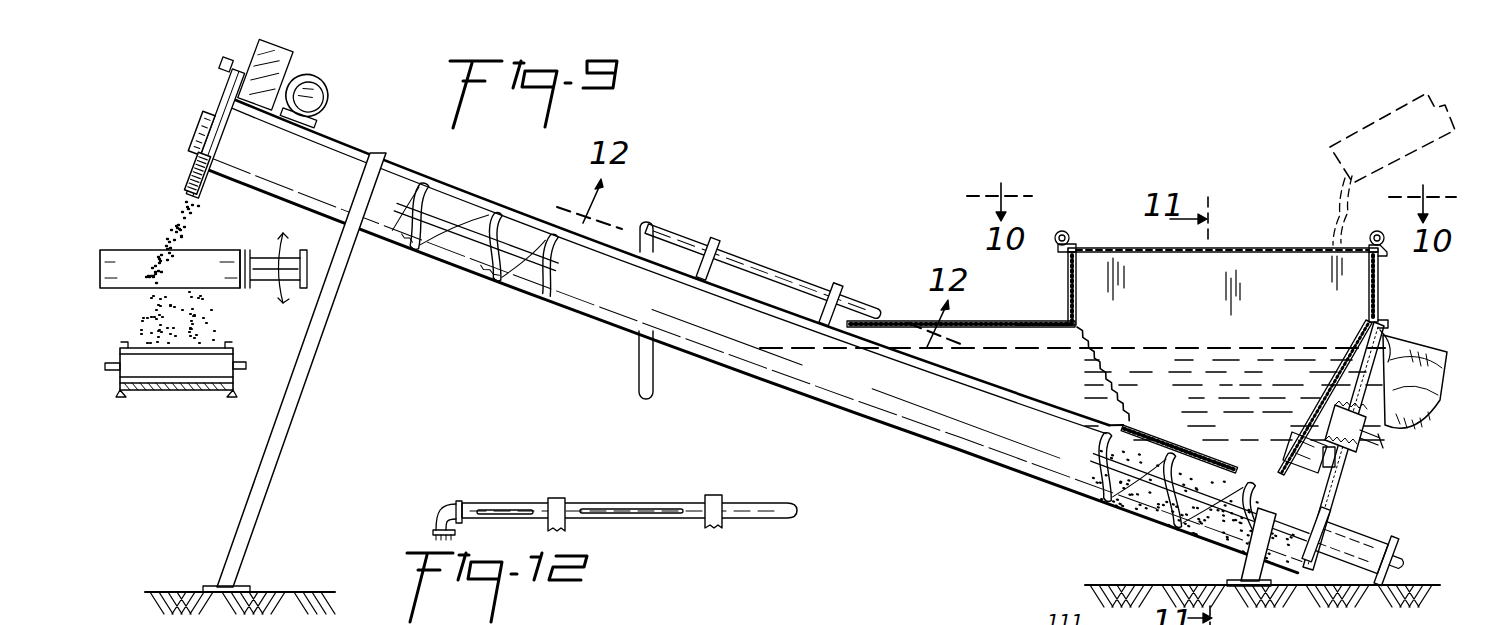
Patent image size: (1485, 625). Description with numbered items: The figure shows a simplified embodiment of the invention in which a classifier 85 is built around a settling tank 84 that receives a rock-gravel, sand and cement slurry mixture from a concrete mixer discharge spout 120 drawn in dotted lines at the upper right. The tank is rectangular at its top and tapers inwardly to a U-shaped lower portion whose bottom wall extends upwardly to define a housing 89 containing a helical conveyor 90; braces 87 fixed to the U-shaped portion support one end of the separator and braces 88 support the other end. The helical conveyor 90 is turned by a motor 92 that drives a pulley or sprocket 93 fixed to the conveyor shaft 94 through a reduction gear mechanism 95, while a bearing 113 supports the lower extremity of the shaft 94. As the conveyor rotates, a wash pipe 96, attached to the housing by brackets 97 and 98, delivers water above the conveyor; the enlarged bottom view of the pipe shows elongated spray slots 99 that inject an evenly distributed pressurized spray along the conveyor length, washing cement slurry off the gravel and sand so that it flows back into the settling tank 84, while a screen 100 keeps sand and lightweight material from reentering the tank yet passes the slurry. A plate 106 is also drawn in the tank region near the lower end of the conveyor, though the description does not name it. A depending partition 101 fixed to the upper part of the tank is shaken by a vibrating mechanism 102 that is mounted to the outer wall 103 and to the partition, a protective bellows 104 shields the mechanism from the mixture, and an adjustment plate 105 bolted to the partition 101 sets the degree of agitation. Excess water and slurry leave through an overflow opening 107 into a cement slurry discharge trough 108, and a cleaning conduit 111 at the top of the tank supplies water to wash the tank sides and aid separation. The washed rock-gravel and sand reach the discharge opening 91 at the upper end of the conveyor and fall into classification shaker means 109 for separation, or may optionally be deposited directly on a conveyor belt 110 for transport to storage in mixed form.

In FIG. 9, the settling tank 84 is at (1068, 280).
In FIG. 9, the classifier 85 is at (928, 200).
In FIG. 9, the braces 87 is at (1244, 562).
In FIG. 9, the braces 88 is at (322, 347).
In FIG. 9, the housing 89 is at (808, 380).
In FIG. 9, the helical conveyor 90 is at (1177, 522).
In FIG. 9, the discharge opening 91 is at (195, 189).
In FIG. 9, the motor 92 is at (329, 84).
In FIG. 9, the pulley or sprocket 93 is at (193, 136).
In FIG. 9, the conveyor shaft 94 is at (462, 213).
In FIG. 9, the reduction gear mechanism 95 is at (232, 90).
In FIG. 9, the wash pipe 96 is at (797, 270).
In FIG. 12, the wash pipe 96 is at (775, 503).
In FIG. 9, the bracket 97 is at (710, 244).
In FIG. 12, the bracket 97 is at (555, 497).
In FIG. 9, the bracket 98 is at (836, 282).
In FIG. 12, the bracket 98 is at (712, 494).
In FIG. 12, the spray slots 99 is at (622, 510).
In FIG. 9, the screen 100 is at (1098, 362).
In FIG. 9, the depending partition 101 is at (1340, 383).
In FIG. 9, the vibrating mechanism 102 is at (1368, 437).
In FIG. 9, the outer wall 103 is at (1337, 501).
In FIG. 9, the protective bellows 104 is at (1338, 475).
In FIG. 9, the adjustment plate 105 is at (1283, 443).
In FIG. 9, the cover plate 106 is at (1226, 456).
In FIG. 9, the overflow opening 107 is at (1388, 331).
In FIG. 9, the cement slurry discharge trough 108 is at (1432, 394).
In FIG. 9, the classification shaker means 109 is at (216, 250).
In FIG. 9, the conveyor belt 110 is at (224, 344).
In FIG. 9, the cleaning conduit 111 is at (1283, 246).
In FIG. 9, the bearing 113 is at (1371, 542).
In FIG. 9, the concrete mixer discharge spout 120 is at (1390, 118).